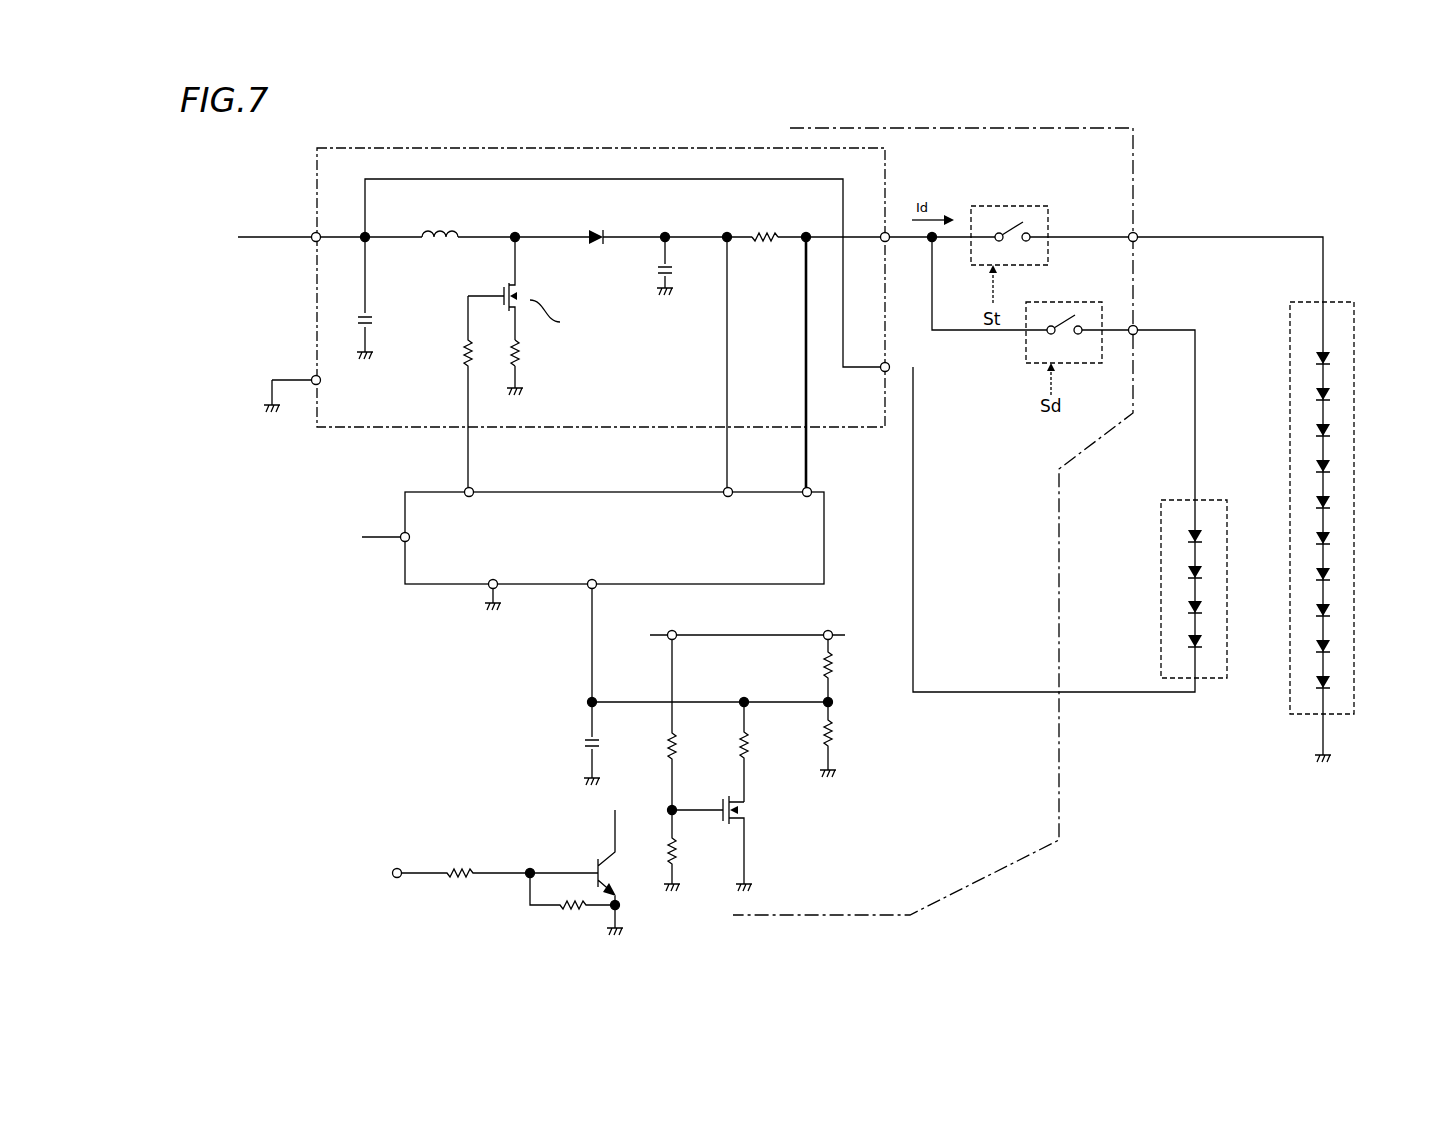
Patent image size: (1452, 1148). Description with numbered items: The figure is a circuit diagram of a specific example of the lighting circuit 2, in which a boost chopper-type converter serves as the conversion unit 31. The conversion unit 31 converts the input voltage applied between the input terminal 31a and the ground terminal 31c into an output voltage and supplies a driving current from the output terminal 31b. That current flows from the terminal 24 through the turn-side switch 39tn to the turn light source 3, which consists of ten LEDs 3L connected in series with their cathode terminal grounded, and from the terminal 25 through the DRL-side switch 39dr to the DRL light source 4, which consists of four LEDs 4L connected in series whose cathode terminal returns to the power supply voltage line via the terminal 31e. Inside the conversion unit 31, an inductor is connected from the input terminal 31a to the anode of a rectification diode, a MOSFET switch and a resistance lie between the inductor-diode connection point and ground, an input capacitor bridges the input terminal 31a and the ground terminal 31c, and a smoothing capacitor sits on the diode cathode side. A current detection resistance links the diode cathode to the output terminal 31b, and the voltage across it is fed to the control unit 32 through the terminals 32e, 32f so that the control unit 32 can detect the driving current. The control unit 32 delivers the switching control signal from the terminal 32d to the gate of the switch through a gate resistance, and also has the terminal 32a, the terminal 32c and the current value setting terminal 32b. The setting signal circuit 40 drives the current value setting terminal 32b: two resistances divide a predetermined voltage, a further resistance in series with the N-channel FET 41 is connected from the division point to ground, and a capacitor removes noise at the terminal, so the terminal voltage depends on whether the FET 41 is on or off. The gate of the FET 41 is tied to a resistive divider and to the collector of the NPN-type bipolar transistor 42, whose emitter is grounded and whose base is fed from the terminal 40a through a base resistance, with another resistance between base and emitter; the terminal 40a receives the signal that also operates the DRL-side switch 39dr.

The lighting circuit 2 is at (1108, 128).
The turn light source 3 is at (1347, 517).
The LED 3L is at (1332, 358).
The DRL light source 4 is at (1161, 567).
The LED 4L is at (1186, 537).
The terminal 24 is at (1140, 233).
The terminal 25 is at (1140, 326).
The conversion unit 31 is at (689, 148).
The input terminal 31a is at (313, 232).
The output terminal 31b is at (888, 232).
The ground terminal 31c is at (311, 378).
The terminal 31e is at (890, 366).
The control unit 32 is at (616, 491).
The terminal 32a is at (402, 533).
The current value setting terminal 32b is at (596, 590).
The terminal 32c is at (488, 590).
The terminal 32d is at (475, 491).
The terminal 32e is at (734, 491).
The terminal 32f is at (813, 491).
The turn-side switch 39tn is at (1025, 206).
The DRL-side switch 39dr is at (1058, 302).
The setting signal circuit 40 is at (624, 782).
The terminal 40a is at (397, 868).
The N-channel FET 41 is at (750, 812).
The NPN-type bipolar transistor 42 is at (618, 878).